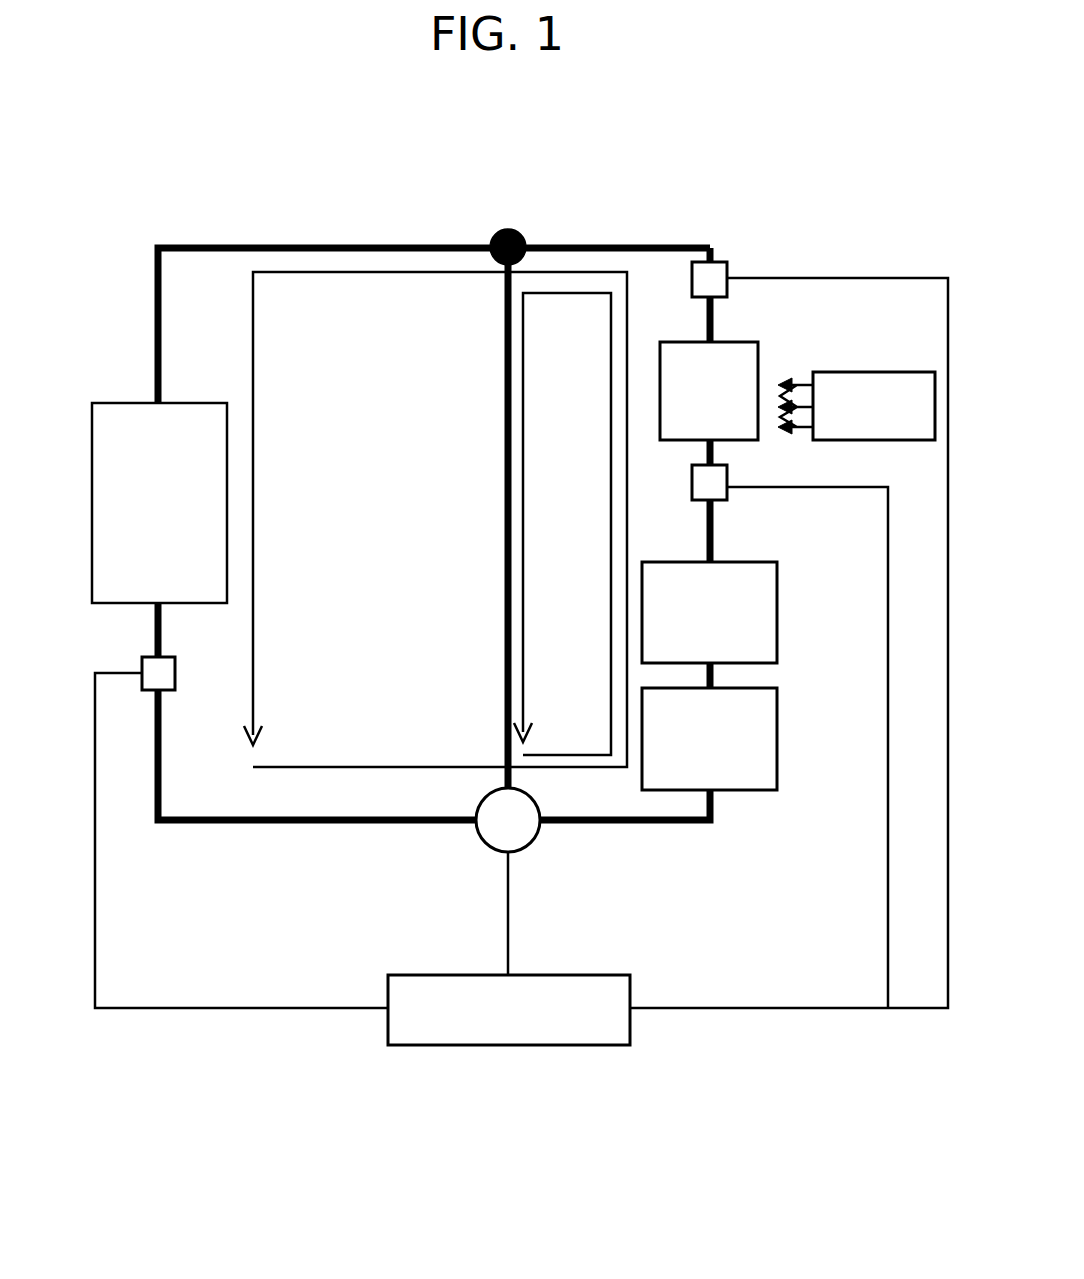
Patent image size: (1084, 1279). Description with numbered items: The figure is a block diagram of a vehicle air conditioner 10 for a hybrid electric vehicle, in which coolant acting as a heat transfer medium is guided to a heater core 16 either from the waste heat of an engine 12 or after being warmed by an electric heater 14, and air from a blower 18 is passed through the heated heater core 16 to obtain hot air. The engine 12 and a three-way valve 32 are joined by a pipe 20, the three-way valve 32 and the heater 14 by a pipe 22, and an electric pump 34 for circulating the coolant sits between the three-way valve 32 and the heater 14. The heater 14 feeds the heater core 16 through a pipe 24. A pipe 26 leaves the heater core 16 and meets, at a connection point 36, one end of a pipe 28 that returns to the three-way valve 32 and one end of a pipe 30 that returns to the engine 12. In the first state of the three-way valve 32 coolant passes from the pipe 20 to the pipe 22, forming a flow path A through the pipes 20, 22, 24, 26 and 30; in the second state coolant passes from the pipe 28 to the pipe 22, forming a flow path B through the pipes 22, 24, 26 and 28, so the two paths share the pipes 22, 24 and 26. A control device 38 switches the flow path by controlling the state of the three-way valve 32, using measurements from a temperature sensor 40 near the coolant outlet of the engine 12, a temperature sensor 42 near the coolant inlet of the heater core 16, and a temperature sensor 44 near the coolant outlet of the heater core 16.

The vehicle air conditioner 10 is at (414, 147).
The engine 12 is at (140, 403).
The heater 14 is at (777, 605).
The heater core 16 is at (758, 348).
The blower 18 is at (882, 372).
The pipe 20 is at (278, 825).
The pipe 22 is at (672, 825).
The pipe 24 is at (713, 530).
The pipe 26 is at (597, 245).
The pipe 28 is at (504, 410).
The pipe 30 is at (283, 245).
The three-way valve 32 is at (492, 850).
The electric pump 34 is at (777, 735).
The connection point 36 is at (505, 230).
The control device 38 is at (540, 1047).
The temperature sensor 40 is at (142, 670).
The temperature sensor 42 is at (727, 480).
The temperature sensor 44 is at (727, 265).
The flow path A is at (255, 455).
The flow path B is at (611, 497).